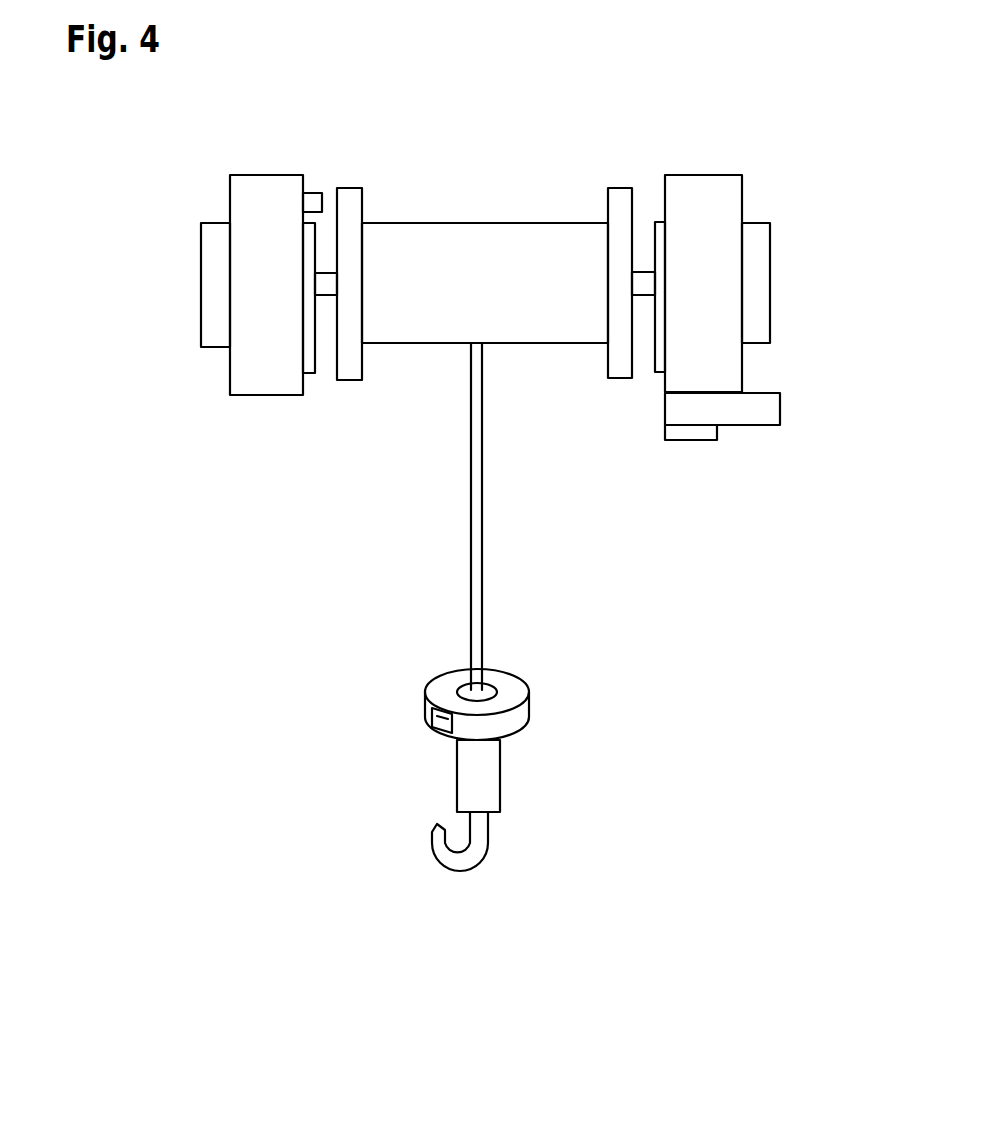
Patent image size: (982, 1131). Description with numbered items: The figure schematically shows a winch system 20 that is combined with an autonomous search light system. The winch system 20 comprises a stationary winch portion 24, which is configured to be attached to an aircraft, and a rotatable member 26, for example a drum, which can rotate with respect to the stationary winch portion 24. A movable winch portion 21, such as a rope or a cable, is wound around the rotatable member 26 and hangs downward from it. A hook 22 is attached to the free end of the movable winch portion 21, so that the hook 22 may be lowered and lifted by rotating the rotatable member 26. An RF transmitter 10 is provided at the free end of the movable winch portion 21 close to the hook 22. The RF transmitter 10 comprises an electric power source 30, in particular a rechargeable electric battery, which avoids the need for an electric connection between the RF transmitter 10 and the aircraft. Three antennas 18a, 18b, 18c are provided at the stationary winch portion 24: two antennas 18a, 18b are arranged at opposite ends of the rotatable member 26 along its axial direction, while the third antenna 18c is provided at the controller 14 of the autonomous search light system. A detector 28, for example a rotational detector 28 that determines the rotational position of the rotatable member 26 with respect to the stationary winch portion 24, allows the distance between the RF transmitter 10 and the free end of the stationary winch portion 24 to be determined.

The RF transmitter 10 is at (442, 683).
The controller 14 is at (757, 403).
The antenna 18a is at (213, 284).
The antenna 18b is at (757, 283).
The antenna 18c is at (687, 432).
The winch system 20 is at (236, 520).
The movable winch portion 21 is at (478, 560).
The hook 22 is at (407, 876).
The stationary winch portion 24 is at (762, 186).
The rotatable member 26 is at (442, 377).
The rotational detector 28 is at (312, 200).
The electric power source 30 is at (432, 711).